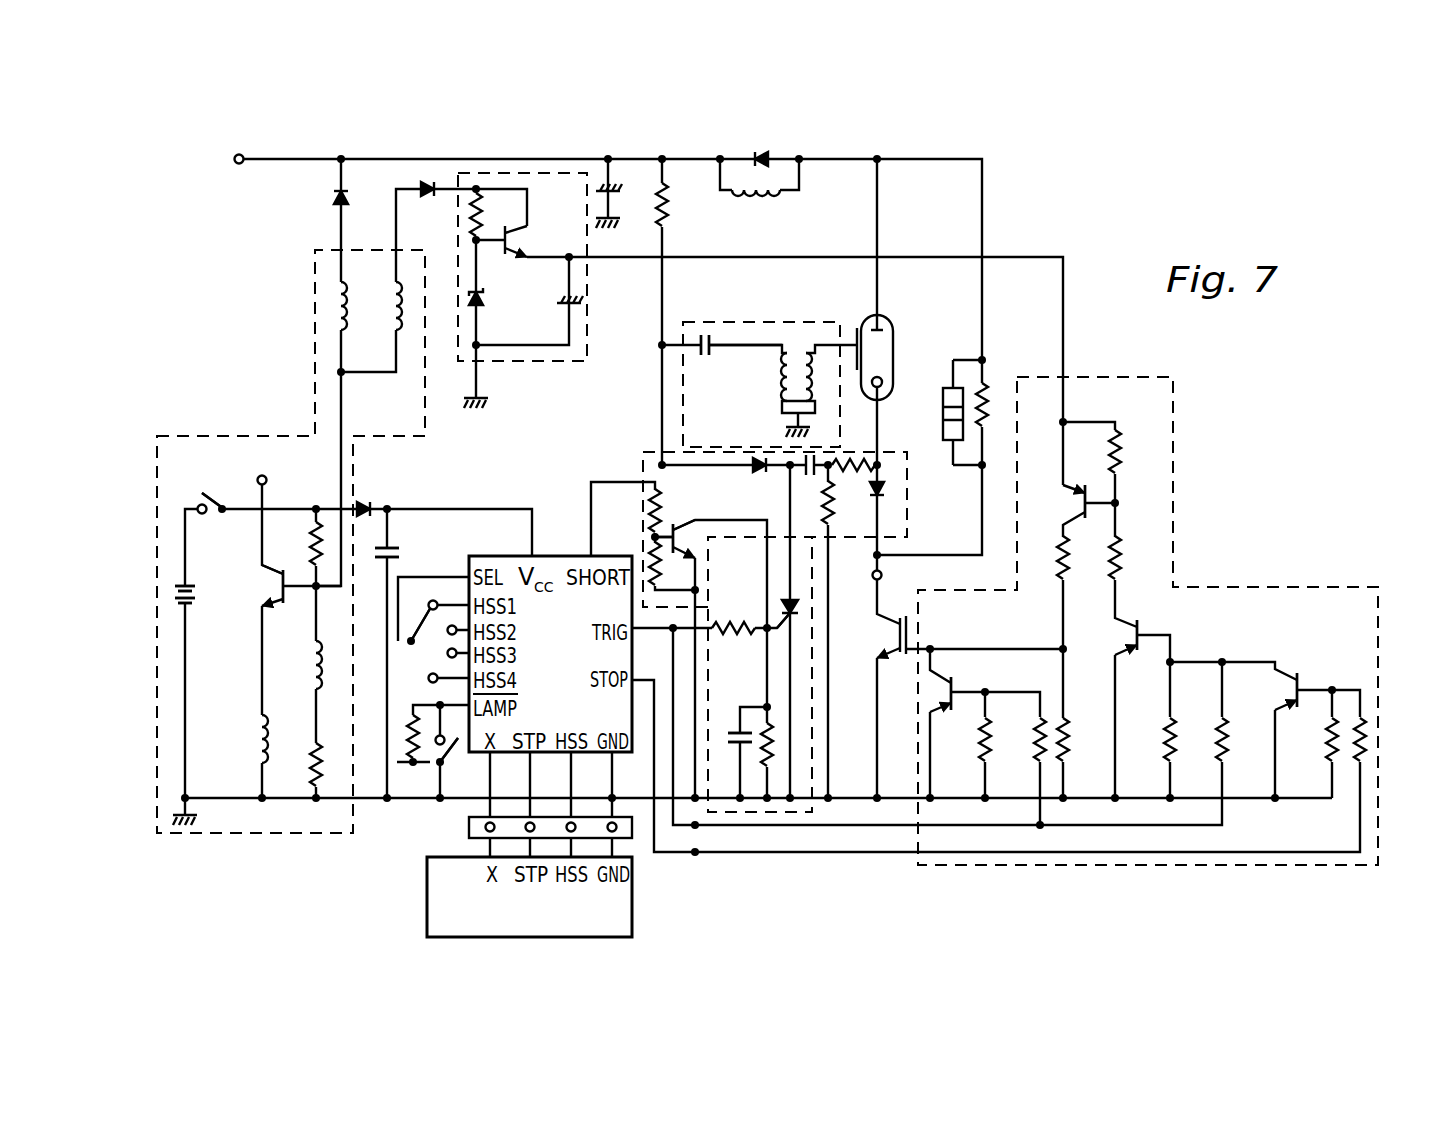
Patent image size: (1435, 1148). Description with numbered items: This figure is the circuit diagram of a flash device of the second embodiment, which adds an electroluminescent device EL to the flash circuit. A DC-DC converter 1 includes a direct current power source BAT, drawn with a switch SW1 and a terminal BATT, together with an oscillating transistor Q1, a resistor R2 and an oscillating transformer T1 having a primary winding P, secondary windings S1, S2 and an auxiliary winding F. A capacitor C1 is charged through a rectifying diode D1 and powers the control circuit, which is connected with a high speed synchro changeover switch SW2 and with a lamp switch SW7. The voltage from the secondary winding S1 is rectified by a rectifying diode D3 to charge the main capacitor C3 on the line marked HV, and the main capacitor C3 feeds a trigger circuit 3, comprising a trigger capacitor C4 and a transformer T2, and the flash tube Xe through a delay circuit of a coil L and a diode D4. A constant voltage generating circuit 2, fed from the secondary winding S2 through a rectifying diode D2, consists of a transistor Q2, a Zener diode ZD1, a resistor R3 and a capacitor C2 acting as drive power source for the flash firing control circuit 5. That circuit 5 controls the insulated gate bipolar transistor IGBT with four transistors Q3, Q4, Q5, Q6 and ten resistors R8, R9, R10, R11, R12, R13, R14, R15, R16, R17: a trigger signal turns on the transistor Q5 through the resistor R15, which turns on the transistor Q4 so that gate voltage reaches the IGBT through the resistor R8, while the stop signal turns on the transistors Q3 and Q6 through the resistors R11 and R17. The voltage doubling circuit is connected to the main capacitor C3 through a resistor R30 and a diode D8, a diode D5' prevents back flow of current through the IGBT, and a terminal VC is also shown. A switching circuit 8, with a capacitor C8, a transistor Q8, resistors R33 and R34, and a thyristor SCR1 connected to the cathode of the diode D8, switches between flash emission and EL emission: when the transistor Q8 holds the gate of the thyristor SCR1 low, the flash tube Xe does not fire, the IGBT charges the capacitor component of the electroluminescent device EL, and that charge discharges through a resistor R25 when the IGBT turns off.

The high voltage input terminal HV is at (218, 162).
The rectifying diode D3 is at (333, 197).
The rectifying diode D2 is at (430, 182).
The secondary winding S1 is at (333, 308).
The secondary winding S2 is at (377, 306).
The resistor R3 is at (477, 215).
The transistor Q2 is at (522, 242).
The Zener diode ZD1 is at (503, 302).
The capacitor C2 is at (578, 303).
The constant voltage generating circuit 2 is at (540, 363).
The main capacitor C3 is at (627, 201).
The resistor R30 is at (668, 193).
The diode D4 is at (767, 156).
The coil L is at (756, 210).
The trigger circuit 3 is at (705, 323).
The trigger capacitor C4 is at (706, 364).
The oscillating transformer T2 is at (800, 345).
The flash tube Xe is at (895, 330).
The electroluminescent device EL is at (943, 420).
The resistor R25 is at (985, 403).
The switching circuit 8 is at (643, 455).
The diode D8 is at (755, 482).
The transistor Q8 is at (688, 537).
The thyristor SCR1 is at (788, 605).
The resistor R33 is at (737, 644).
The diode D5' is at (915, 489).
The voltage terminal VC is at (898, 577).
The insulated gate bipolar transistor IGBT is at (910, 632).
The transistor Q3 is at (953, 679).
The resistor R10 is at (982, 727).
The resistor R11 is at (1035, 730).
The resistor R9 is at (1084, 739).
The transistor Q4 is at (1053, 504).
The resistor R12 is at (1138, 453).
The resistor R8 is at (1082, 560).
The resistor R13 is at (1123, 558).
The transistor Q5 is at (1108, 637).
The resistor R14 is at (1175, 717).
The resistor R15 is at (1218, 757).
The transistor Q6 is at (1266, 691).
The resistor R16 is at (1330, 752).
The resistor R17 is at (1370, 740).
The flash firing control circuit 5 is at (1342, 585).
The DC-DC converter 1 is at (228, 838).
The power switch SW1 is at (205, 500).
The battery terminal BATT is at (262, 464).
The direct current power source BAT is at (213, 621).
The oscillating transistor Q1 is at (256, 585).
The auxiliary winding F is at (313, 652).
The oscillating transformer T1 is at (301, 625).
The primary winding P is at (253, 739).
The resistor R2 is at (315, 778).
The rectifying diode D1 is at (368, 501).
The capacitor C1 is at (402, 554).
The high speed synchro changeover switch SW2 is at (422, 642).
The lamp switch SW7 is at (440, 753).
The capacitor C8 is at (735, 745).
The resistor R34 is at (772, 773).